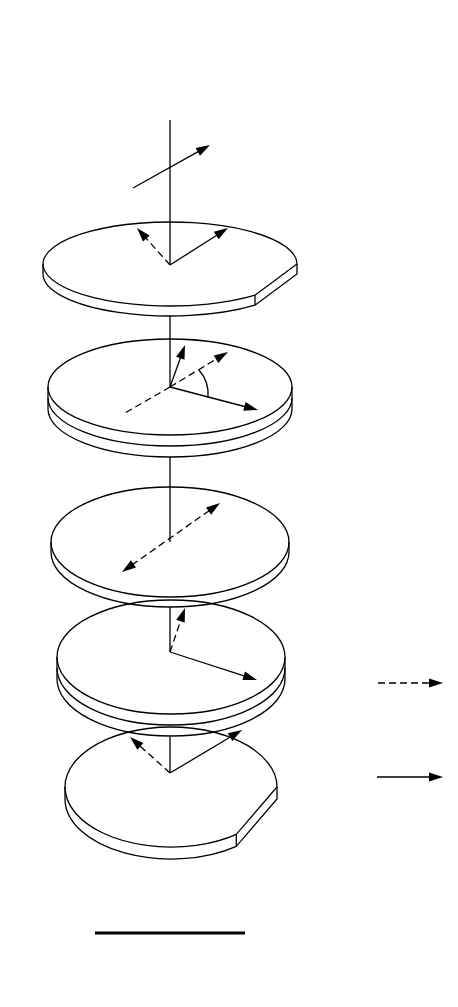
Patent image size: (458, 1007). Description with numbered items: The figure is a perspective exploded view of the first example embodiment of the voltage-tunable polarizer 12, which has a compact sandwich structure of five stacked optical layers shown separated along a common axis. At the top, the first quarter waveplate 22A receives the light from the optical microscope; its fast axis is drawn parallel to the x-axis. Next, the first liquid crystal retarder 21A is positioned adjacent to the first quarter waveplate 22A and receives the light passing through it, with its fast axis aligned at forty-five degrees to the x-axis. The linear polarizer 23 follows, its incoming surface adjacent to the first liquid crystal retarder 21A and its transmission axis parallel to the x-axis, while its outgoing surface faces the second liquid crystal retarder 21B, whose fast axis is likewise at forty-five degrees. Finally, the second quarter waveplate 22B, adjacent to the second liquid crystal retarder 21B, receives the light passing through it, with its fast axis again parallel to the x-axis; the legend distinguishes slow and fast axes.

The voltage-tunable polarizer 12 is at (80, 88).
The first quarter waveplate 22A is at (72, 252).
The first liquid crystal retarder 21A is at (75, 373).
The linear polarizer 23 is at (78, 528).
The second liquid crystal retarder 21B is at (83, 640).
The second quarter waveplate 22B is at (90, 763).